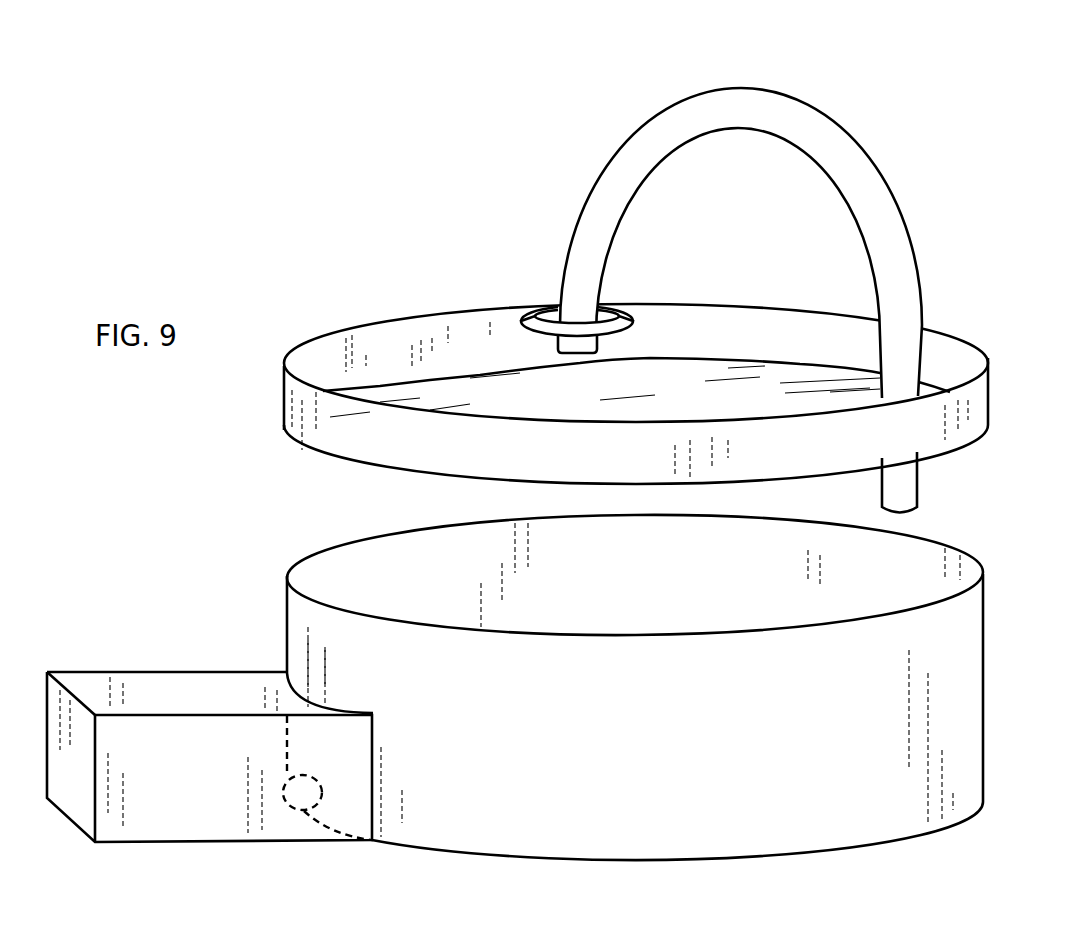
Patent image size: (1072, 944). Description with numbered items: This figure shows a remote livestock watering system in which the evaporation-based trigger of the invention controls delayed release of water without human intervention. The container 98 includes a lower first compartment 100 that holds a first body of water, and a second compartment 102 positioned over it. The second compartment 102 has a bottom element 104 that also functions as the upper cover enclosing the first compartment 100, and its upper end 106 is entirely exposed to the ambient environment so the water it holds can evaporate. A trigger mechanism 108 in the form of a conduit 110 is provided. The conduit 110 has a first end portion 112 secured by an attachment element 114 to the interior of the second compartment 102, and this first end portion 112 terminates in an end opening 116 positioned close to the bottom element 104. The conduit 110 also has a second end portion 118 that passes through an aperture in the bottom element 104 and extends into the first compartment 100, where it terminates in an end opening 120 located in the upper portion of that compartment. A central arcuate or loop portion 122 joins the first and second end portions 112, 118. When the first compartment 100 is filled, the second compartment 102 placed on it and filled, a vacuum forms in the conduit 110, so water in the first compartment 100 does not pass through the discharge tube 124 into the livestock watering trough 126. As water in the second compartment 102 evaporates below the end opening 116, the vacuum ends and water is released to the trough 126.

The container 98 is at (990, 641).
The first compartment 100 is at (950, 723).
The second compartment 102 is at (639, 374).
The bottom element 104 is at (677, 390).
The upper end 106 is at (322, 340).
The trigger mechanism 108 is at (671, 277).
The conduit 110 is at (846, 169).
The first end portion 112 is at (580, 252).
The attachment element 114 is at (532, 322).
The end opening 116 is at (578, 357).
The second end portion 118 is at (909, 349).
The end opening 120 is at (903, 510).
The central arcuate or loop portion 122 is at (702, 90).
The discharge tube 124 is at (307, 800).
The livestock watering trough 126 is at (140, 812).